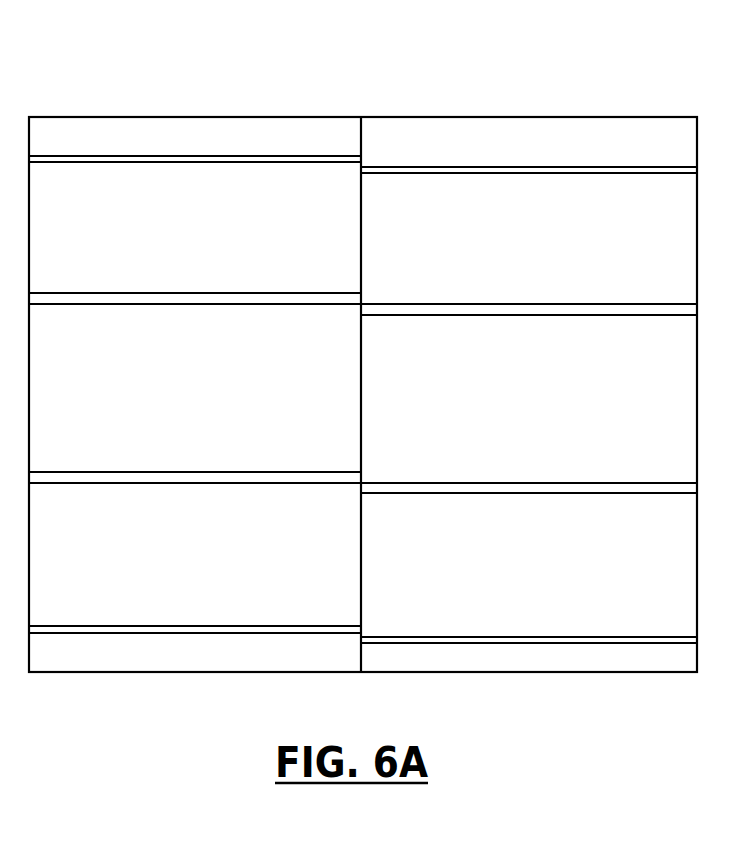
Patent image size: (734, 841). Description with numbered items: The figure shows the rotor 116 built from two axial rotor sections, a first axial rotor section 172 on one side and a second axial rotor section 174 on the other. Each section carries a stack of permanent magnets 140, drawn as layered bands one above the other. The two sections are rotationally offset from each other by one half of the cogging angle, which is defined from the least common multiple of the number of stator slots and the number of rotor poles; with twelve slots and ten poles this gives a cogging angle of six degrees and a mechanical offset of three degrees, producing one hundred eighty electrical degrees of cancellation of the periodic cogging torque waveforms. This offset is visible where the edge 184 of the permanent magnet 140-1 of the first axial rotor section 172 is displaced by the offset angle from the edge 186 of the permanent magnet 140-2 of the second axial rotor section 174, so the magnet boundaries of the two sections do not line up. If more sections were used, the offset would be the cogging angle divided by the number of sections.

The rotor 116 is at (154, 63).
The first axial rotor section 172 is at (197, 117).
The second axial rotor section 174 is at (528, 117).
The permanent magnet 140 is at (282, 149).
The permanent magnet of the first axial rotor section 140-1 is at (254, 372).
The permanent magnet of the second axial rotor section 140-2 is at (632, 371).
The edge of permanent magnet 140-1 184 is at (257, 308).
The edge of permanent magnet 140-2 186 is at (528, 315).